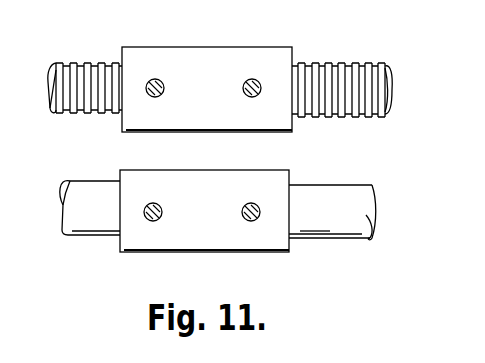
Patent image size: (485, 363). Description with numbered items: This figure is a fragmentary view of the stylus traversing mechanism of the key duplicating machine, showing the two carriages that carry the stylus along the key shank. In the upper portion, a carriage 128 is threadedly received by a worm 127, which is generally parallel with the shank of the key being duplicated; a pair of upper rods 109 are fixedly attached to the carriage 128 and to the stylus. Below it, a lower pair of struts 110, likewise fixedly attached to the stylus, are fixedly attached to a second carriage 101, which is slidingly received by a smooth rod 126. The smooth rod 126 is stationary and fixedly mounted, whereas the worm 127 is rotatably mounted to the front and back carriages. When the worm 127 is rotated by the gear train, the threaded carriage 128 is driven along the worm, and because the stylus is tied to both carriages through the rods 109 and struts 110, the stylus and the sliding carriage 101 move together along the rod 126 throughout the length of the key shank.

The carriage 128 is at (214, 58).
The upper rods 109 is at (242, 90).
The worm 127 is at (334, 72).
The carriage 101 is at (213, 173).
The lower pair of struts 110 is at (241, 211).
The smooth rod 126 is at (342, 197).